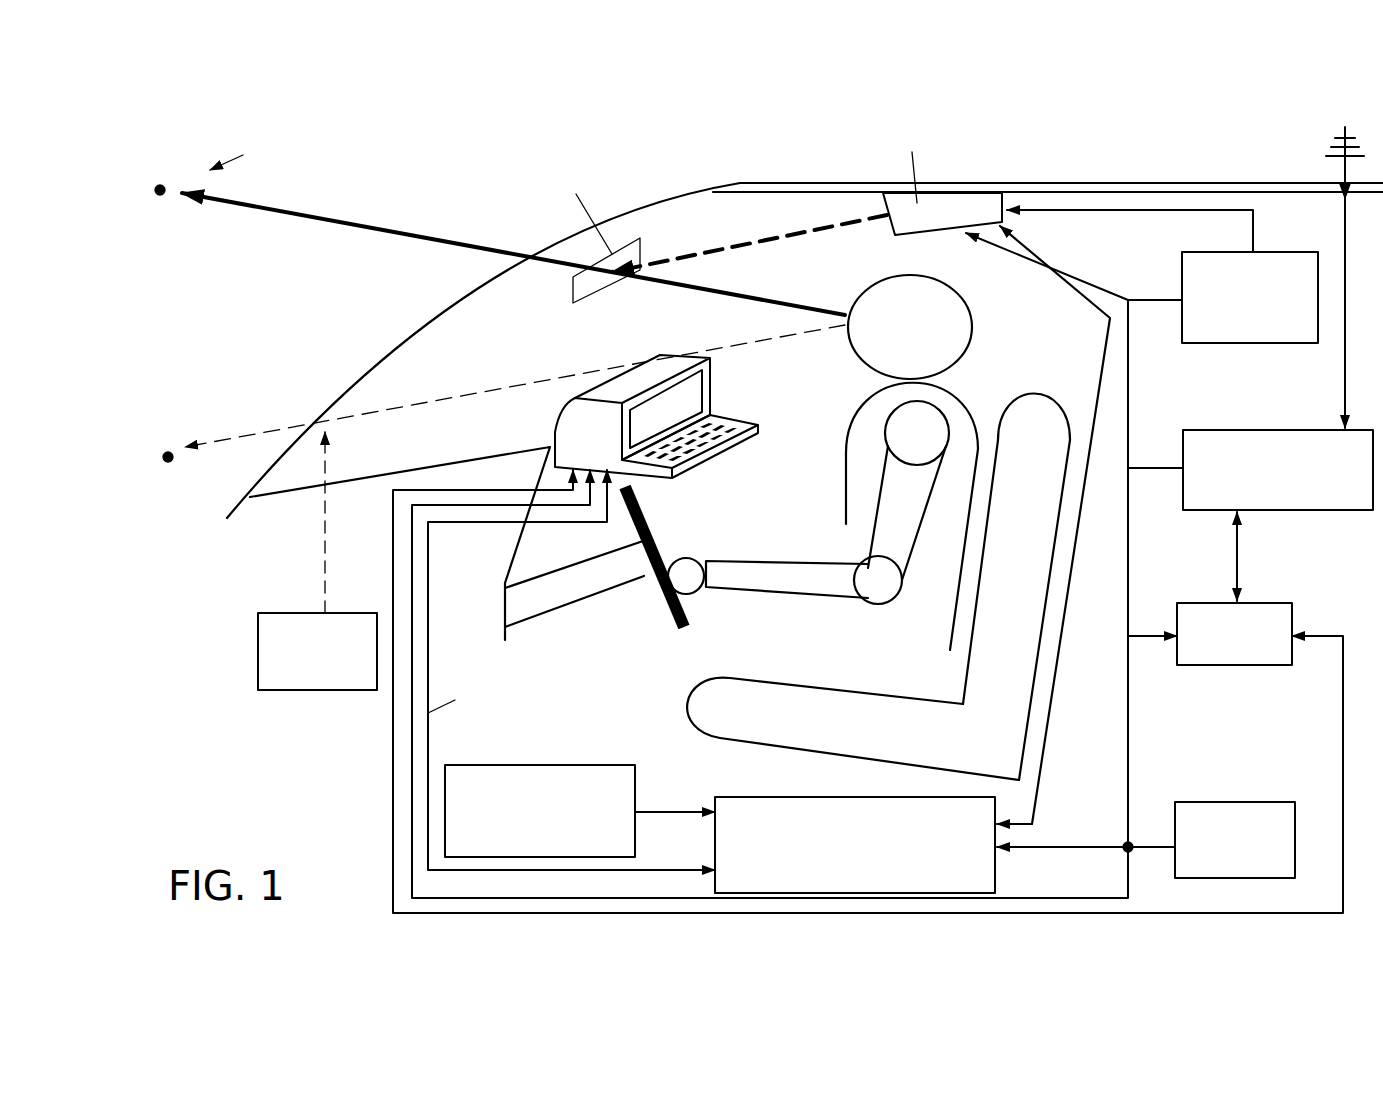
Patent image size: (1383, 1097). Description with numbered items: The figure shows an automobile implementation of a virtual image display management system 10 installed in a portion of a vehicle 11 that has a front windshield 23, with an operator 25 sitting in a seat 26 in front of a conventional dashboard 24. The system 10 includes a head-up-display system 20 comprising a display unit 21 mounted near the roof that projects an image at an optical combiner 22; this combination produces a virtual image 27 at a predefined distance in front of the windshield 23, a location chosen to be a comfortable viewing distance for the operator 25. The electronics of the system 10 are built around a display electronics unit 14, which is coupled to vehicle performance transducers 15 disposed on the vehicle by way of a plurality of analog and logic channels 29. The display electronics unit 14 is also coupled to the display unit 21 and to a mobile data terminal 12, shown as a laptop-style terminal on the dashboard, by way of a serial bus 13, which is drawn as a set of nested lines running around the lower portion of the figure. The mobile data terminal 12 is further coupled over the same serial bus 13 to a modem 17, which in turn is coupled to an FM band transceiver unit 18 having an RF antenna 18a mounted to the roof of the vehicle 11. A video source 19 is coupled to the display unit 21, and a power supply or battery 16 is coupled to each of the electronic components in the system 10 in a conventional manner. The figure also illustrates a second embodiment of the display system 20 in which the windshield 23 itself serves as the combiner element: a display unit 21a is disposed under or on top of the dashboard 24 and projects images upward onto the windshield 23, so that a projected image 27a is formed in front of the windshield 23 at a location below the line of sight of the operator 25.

The virtual image display management system 10 is at (238, 742).
The vehicle 11 is at (1297, 118).
The mobile data terminal 12 is at (595, 387).
The RS-232 bus 13 is at (397, 663).
The display electronics unit 14 is at (715, 797).
The vehicle performance transducers 15 is at (543, 763).
The battery 16 is at (1240, 800).
The modem 17 is at (1270, 600).
The FM band transceiver unit 18 is at (1283, 428).
The RF antenna 18a is at (1343, 170).
The video source 19 is at (1243, 346).
The head-up-display system 20 is at (1082, 130).
The display unit 21 is at (893, 233).
The display unit 21a is at (257, 642).
The optical combiner 22 is at (590, 300).
The front windshield 23 is at (418, 337).
The dashboard 24 is at (490, 452).
The operator 25 is at (965, 410).
The seat 26 is at (1055, 400).
The virtual image 27 is at (162, 196).
The projected image 27a is at (170, 462).
The analog and logic channels 29 is at (675, 815).